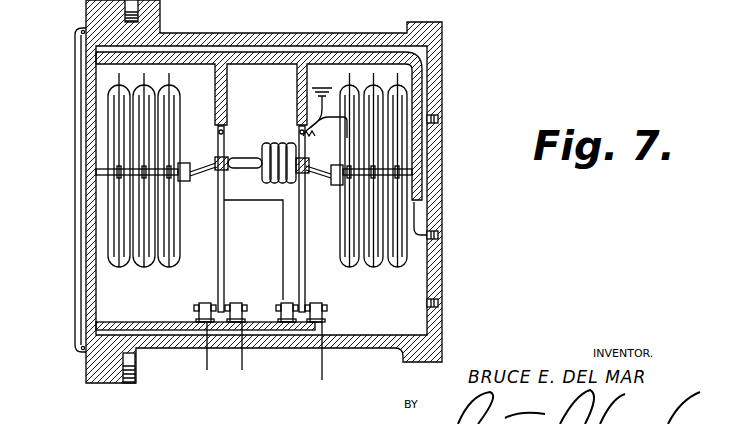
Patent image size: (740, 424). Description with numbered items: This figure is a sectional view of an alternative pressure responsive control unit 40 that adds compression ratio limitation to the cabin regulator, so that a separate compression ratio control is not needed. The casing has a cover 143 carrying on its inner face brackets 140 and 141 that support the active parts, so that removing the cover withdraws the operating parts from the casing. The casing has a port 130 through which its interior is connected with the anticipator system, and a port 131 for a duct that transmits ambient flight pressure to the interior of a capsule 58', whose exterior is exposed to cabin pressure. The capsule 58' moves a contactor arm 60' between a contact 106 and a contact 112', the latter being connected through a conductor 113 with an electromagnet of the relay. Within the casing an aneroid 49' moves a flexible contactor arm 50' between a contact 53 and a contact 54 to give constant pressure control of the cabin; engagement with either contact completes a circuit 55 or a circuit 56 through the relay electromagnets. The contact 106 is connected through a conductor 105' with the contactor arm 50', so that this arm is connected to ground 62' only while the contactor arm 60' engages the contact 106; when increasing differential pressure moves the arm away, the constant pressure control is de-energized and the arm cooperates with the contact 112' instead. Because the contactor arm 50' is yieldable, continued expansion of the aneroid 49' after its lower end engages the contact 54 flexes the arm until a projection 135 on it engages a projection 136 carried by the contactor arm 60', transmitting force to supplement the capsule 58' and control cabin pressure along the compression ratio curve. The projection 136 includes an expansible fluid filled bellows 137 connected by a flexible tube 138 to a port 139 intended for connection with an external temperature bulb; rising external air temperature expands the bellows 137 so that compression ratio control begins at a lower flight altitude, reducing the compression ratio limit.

The control unit 40 is at (200, 30).
The bracket 140 is at (253, 60).
The bracket 141 is at (170, 322).
The cover 143 is at (86, 62).
The aneroid 49' is at (123, 170).
The capsule 58' is at (390, 166).
The contactor arm 50' is at (204, 219).
The contactor arm 60' is at (315, 219).
The projection 135 is at (226, 158).
The projection 136 is at (229, 169).
The expansible fluid filled bellows 137 is at (290, 142).
The flexible tube 138 is at (337, 132).
The ground 62' is at (330, 73).
The conductor 105' is at (253, 250).
The port 139 is at (438, 117).
The port 131 is at (438, 235).
The port 130 is at (438, 303).
The contact 53 is at (207, 303).
The contact 54 is at (243, 298).
The contact 106 is at (294, 304).
The contact 112' is at (340, 304).
The circuit 55 is at (207, 372).
The circuit 56 is at (242, 372).
The conductor 113 is at (322, 368).